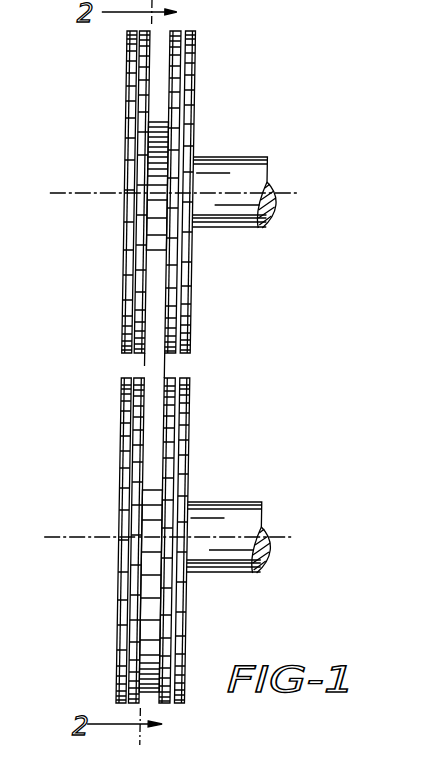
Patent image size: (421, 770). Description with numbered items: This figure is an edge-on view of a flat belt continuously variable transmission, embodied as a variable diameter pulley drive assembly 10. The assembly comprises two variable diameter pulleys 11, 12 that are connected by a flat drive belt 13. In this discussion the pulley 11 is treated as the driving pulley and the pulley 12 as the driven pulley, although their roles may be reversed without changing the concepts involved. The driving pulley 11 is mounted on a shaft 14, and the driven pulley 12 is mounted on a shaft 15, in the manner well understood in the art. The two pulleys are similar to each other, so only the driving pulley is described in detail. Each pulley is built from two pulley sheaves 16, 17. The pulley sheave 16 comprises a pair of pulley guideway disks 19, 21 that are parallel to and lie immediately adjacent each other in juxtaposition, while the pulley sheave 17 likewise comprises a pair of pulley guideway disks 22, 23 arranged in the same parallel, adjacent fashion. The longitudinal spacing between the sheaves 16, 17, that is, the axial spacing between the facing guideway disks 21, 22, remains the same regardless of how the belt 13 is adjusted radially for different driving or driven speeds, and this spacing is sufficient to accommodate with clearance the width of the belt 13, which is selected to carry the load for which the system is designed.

The variable diameter pulley drive assembly 10 is at (296, 124).
The variable diameter pulley 11 is at (204, 103).
The variable diameter pulley 12 is at (207, 431).
The flat drive belt 13 is at (171, 367).
The shaft 14 is at (236, 229).
The shaft 15 is at (236, 480).
The pulley sheave 16 is at (203, 138).
The pulley sheave 17 is at (118, 162).
The pulley guideway disk 19 is at (191, 77).
The pulley guideway disk 21 is at (180, 39).
The pulley guideway disk 22 is at (143, 78).
The pulley guideway disk 23 is at (129, 137).